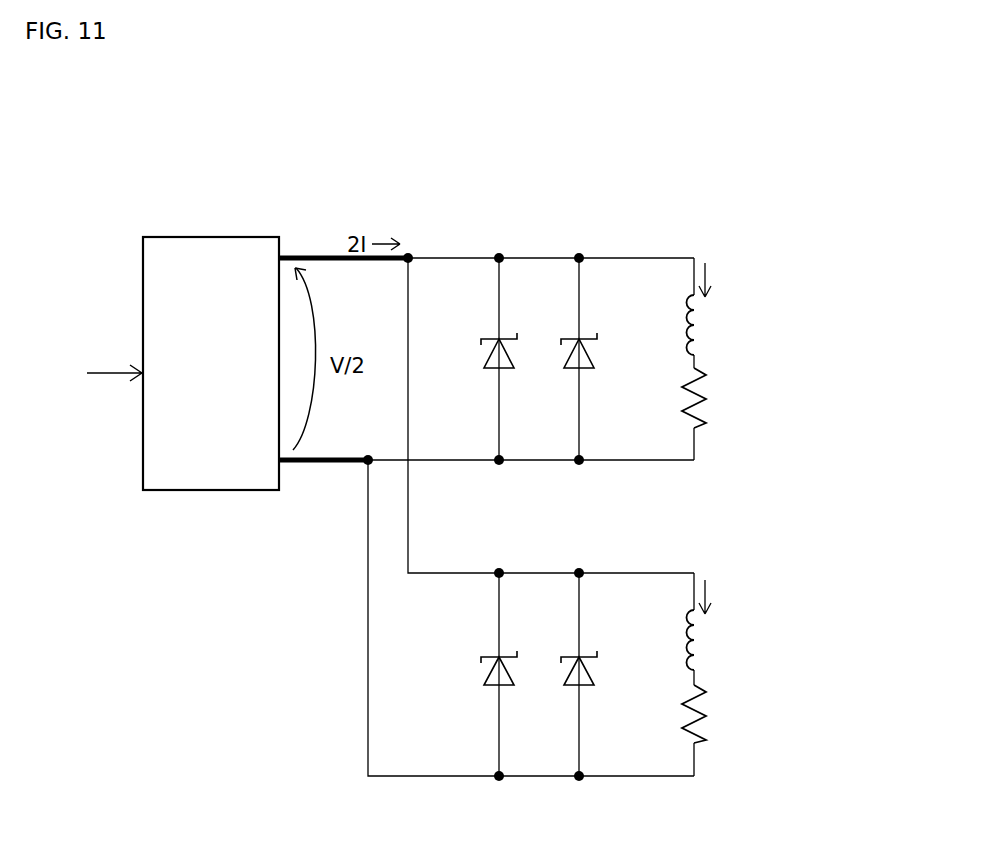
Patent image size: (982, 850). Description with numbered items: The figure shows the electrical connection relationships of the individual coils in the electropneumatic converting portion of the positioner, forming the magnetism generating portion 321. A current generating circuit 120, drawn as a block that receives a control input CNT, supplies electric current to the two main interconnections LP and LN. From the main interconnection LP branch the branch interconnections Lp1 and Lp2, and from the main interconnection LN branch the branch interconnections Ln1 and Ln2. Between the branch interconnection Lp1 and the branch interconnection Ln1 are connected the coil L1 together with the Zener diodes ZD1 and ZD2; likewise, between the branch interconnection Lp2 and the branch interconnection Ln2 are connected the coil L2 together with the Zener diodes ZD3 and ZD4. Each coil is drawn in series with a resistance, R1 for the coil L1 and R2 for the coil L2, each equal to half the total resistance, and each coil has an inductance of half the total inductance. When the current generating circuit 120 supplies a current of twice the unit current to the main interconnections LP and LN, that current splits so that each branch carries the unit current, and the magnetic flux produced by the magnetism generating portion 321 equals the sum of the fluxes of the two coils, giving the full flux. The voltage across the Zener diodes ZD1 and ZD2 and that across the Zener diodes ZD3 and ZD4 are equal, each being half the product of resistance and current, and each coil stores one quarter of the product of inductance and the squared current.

The current generating circuit 120 is at (210, 237).
The magnetism generating portion 321 is at (820, 177).
The main interconnection LP is at (306, 256).
The main interconnection LN is at (305, 464).
The branch interconnection Lp1 is at (456, 257).
The branch interconnection Ln1 is at (452, 459).
The branch interconnection Lp2 is at (456, 572).
The branch interconnection Ln2 is at (429, 775).
The Zener diode ZD1 is at (514, 359).
The Zener diode ZD2 is at (594, 359).
The Zener diode ZD3 is at (514, 674).
The Zener diode ZD4 is at (594, 674).
The coil L1 is at (726, 331).
The coil L2 is at (723, 647).
The resistor R1 is at (725, 401).
The resistor R2 is at (723, 717).
The control signal CNT is at (88, 373).